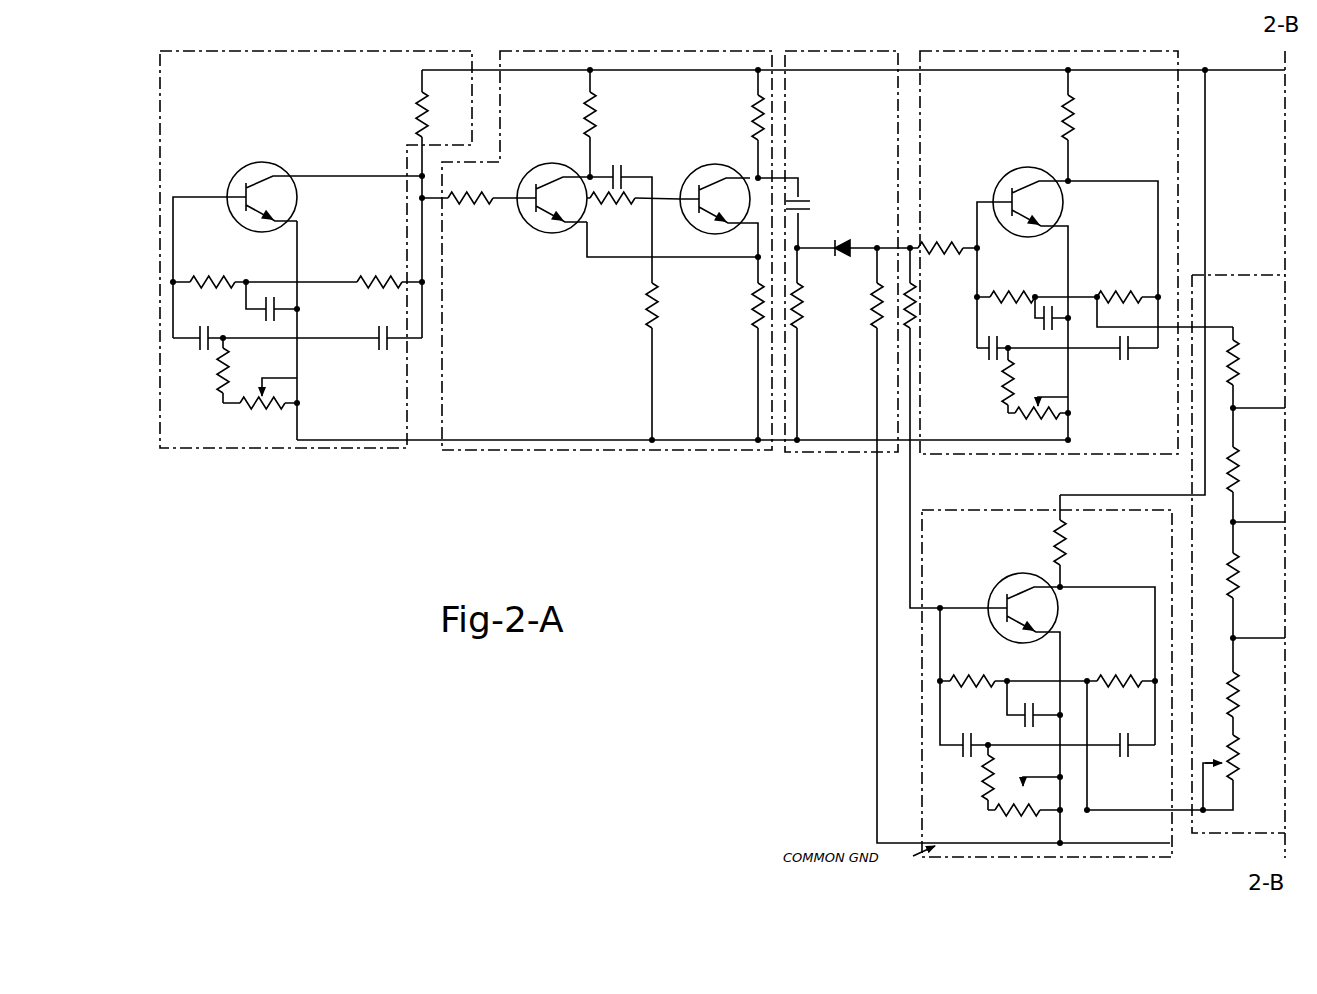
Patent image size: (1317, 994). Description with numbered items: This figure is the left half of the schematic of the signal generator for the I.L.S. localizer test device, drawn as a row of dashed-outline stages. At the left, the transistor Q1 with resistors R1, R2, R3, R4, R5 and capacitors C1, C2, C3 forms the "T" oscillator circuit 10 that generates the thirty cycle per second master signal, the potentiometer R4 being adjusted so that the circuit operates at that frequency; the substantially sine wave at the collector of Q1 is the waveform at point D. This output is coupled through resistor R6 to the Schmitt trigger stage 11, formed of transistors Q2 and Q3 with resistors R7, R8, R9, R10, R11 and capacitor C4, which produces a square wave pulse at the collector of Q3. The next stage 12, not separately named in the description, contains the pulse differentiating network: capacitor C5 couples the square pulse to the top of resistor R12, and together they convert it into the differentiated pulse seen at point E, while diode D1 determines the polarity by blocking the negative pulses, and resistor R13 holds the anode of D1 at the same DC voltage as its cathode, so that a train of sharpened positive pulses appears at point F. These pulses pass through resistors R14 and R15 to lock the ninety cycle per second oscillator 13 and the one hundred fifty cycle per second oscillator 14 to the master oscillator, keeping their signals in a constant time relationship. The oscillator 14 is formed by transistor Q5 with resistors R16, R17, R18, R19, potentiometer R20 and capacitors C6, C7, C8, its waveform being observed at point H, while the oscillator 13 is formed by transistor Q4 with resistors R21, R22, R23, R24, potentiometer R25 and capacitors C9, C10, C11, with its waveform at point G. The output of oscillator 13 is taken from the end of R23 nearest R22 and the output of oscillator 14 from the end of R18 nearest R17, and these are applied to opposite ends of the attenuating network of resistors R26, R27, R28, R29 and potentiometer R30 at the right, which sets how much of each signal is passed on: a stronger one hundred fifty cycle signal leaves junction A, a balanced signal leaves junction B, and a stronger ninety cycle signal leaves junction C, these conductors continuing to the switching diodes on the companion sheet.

The "T" oscillator circuit 10 is at (262, 50).
The Schmitt trigger stage 11 is at (558, 50).
The detector stage 12 is at (826, 50).
The 90 cycle per second oscillator 13 is at (922, 664).
The 150 cycle per second oscillator 14 is at (1030, 50).
The transistor Q1 is at (262, 184).
The transistor Q2 is at (552, 184).
The transistor Q3 is at (715, 185).
The transistor Q4 is at (1009, 599).
The transistor Q5 is at (1026, 190).
The diode D1 is at (837, 258).
The resistor R1 is at (212, 271).
The resistor R2 is at (379, 271).
The resistor R3 is at (207, 370).
The potentiometer R4 is at (260, 406).
The resistor R5 is at (435, 123).
The resistor R6 is at (469, 188).
The resistor R7 is at (605, 123).
The resistor R8 is at (633, 214).
The resistor R9 is at (665, 361).
The resistor R10 is at (777, 124).
The resistor R11 is at (740, 348).
The resistor R12 is at (814, 344).
The resistor R13 is at (863, 288).
The resistor R14 is at (930, 288).
The resistor R15 is at (940, 234).
The resistor R16 is at (1088, 125).
The resistor R17 is at (1012, 285).
The resistor R18 is at (1119, 285).
The resistor R19 is at (988, 380).
The potentiometer R20 is at (1038, 419).
The resistor R21 is at (1079, 541).
The resistor R22 is at (972, 669).
The resistor R23 is at (1119, 669).
The resistor R24 is at (967, 777).
The potentiometer R25 is at (1024, 808).
The resistor R26 is at (1253, 367).
The resistor R27 is at (1250, 465).
The resistor R28 is at (1251, 580).
The resistor R29 is at (1252, 686).
The potentiometer R30 is at (1241, 757).
The capacitor C1 is at (203, 330).
The capacitor C2 is at (376, 330).
The capacitor C3 is at (271, 309).
The capacitor C4 is at (621, 216).
The capacitor C5 is at (807, 193).
The capacitor C6 is at (997, 340).
The capacitor C7 is at (1135, 342).
The capacitor C8 is at (1045, 326).
The capacitor C9 is at (961, 737).
The capacitor C10 is at (1127, 736).
The capacitor C11 is at (1029, 705).
The junction A is at (1240, 405).
The junction B is at (1240, 519).
The junction C is at (1240, 635).
The waveform point D is at (418, 170).
The waveform point E is at (804, 242).
The waveform point F is at (879, 240).
The waveform point G is at (1054, 580).
The waveform point H is at (1066, 174).